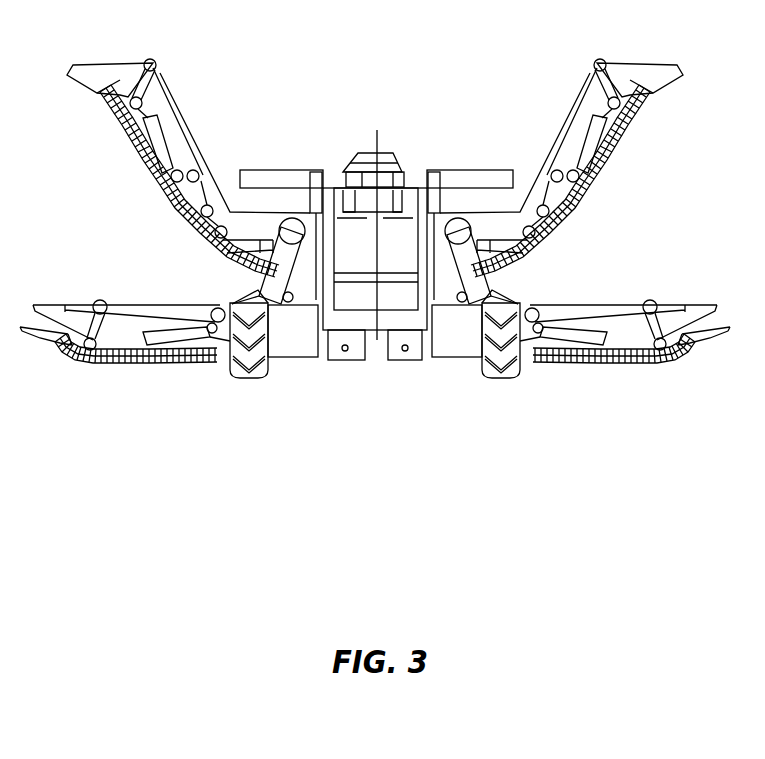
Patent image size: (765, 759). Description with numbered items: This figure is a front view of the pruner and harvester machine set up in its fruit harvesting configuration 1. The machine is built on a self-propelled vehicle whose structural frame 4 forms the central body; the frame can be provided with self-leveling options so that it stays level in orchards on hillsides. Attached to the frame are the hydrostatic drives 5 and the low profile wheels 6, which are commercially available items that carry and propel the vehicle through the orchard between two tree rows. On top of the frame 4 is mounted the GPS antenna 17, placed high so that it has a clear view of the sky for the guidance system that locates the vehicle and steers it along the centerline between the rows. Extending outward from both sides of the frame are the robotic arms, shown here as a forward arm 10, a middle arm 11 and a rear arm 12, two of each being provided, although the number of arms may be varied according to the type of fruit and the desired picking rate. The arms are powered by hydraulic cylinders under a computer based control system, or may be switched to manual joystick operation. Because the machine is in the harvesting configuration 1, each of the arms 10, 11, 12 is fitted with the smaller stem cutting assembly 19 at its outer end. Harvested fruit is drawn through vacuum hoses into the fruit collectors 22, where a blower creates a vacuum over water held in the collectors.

The fruit harvesting configuration 1 is at (321, 466).
The structural frame 4 is at (483, 170).
The hydrostatic drives 5 is at (292, 362).
The low profile wheels 6 is at (242, 372).
The forward arm 10 is at (226, 301).
The middle arm 11 is at (210, 178).
The rear arm 12 is at (214, 186).
The GPS antenna 17 is at (380, 153).
The stem cutting assembly 19 is at (115, 62).
The fruit collector 22 is at (405, 367).